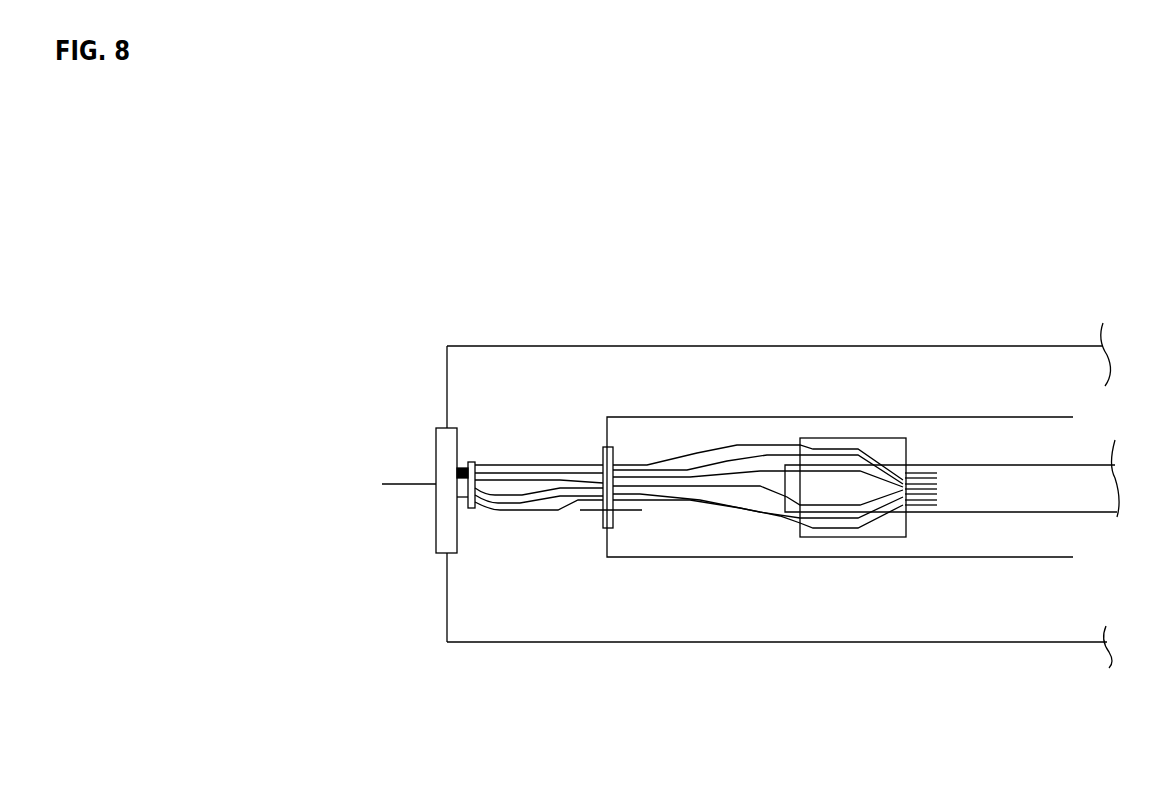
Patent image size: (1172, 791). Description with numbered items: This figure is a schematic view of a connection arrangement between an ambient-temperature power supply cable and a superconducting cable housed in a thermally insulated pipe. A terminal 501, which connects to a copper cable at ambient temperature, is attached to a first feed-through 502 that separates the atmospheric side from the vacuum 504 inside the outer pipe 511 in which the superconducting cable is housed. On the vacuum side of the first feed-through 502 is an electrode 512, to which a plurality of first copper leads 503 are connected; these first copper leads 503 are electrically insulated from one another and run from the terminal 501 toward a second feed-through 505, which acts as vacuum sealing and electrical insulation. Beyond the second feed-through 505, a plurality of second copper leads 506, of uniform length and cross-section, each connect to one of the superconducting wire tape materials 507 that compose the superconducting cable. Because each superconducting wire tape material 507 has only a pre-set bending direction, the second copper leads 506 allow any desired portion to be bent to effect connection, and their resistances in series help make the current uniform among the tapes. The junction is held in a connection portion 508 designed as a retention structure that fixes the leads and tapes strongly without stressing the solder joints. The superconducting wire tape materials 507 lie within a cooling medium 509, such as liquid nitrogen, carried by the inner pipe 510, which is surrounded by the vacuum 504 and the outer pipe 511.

The terminal 501 is at (361, 499).
The first feed-through 502 is at (367, 530).
The first copper leads 503 is at (549, 521).
The vacuum 504 is at (521, 397).
The second feed-through 505 is at (688, 530).
The second copper leads 506 is at (758, 473).
The superconducting wire tape materials 507 is at (925, 470).
The connection portion 508 is at (868, 537).
The cooling medium 509 is at (968, 491).
The inner pipe 510 is at (1018, 558).
The outer pipe 511 is at (1017, 643).
The electrode 512 is at (450, 553).